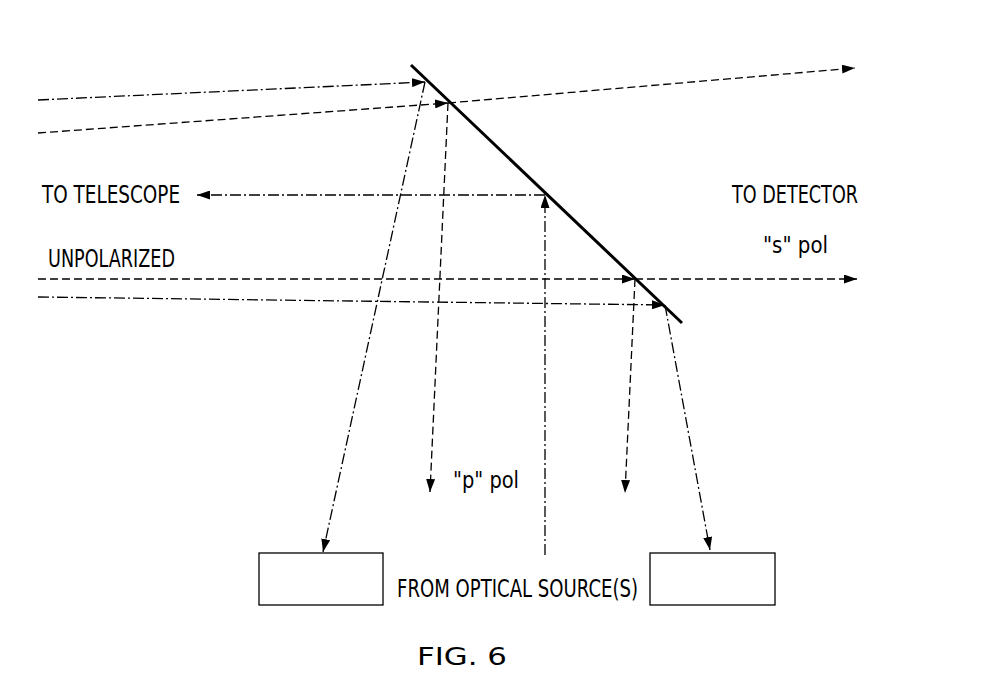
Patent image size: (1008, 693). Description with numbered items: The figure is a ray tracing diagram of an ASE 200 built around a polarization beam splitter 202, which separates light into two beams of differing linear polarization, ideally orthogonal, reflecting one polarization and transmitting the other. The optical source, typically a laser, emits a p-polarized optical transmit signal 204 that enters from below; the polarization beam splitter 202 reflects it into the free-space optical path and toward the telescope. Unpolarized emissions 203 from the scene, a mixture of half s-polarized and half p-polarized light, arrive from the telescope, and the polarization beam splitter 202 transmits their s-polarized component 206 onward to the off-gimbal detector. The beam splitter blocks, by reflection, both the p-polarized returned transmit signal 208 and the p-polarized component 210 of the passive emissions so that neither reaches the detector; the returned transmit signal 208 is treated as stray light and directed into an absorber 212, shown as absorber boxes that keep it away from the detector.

The ASE 200 is at (118, 58).
The polarization beam splitter 202 is at (490, 141).
The emissions 203 is at (240, 279).
The optical transmit signal 204 is at (545, 426).
The s-polarized component 206 is at (724, 283).
The returned transmit signal 208 is at (374, 400).
The p-polarized component 210 is at (436, 370).
The absorber 212 is at (258, 580).